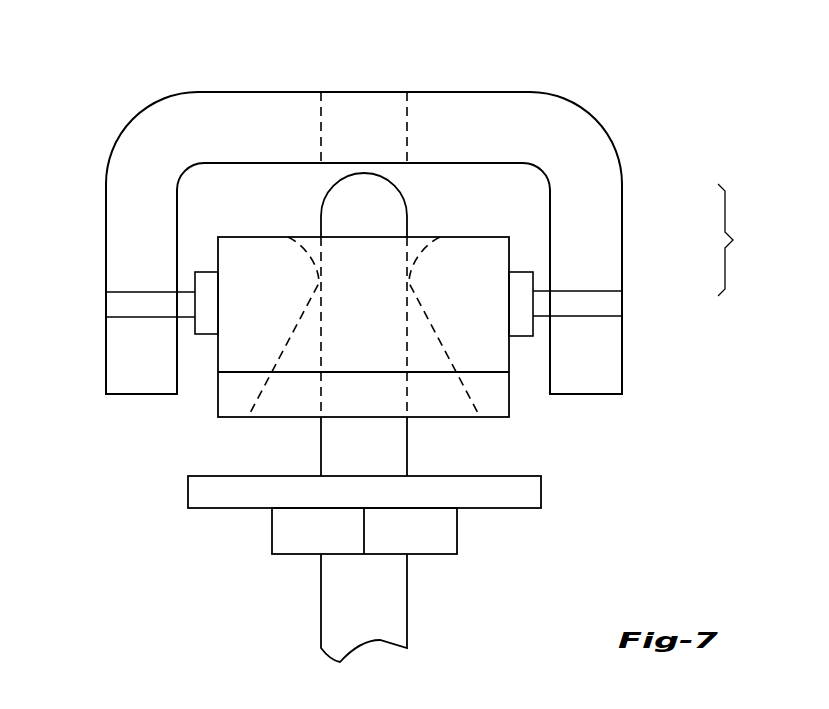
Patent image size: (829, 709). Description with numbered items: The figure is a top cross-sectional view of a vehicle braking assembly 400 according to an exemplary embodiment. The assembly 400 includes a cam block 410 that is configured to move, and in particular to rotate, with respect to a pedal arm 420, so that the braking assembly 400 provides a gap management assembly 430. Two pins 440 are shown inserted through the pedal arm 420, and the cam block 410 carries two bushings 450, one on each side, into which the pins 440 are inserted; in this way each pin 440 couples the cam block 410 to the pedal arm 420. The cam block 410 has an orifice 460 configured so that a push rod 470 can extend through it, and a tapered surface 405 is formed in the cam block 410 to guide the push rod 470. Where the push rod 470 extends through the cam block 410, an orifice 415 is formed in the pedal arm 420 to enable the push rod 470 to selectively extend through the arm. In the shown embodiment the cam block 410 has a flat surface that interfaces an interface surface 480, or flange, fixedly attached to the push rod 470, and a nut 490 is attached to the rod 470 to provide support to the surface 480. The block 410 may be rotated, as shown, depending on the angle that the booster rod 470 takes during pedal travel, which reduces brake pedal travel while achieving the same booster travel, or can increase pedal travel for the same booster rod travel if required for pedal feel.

The vehicle braking assembly 400 is at (108, 113).
The tapered surface 405 is at (300, 253).
The cam block 410 is at (452, 265).
The orifice 415 is at (411, 112).
The pedal arm 420 is at (130, 211).
The gap management assembly 430 is at (744, 240).
The pins 440 is at (128, 300).
The bushings 450 is at (207, 282).
The orifice 460 is at (428, 420).
The push rod 470 is at (388, 600).
The interface surface 480 is at (205, 490).
The nut 490 is at (437, 530).